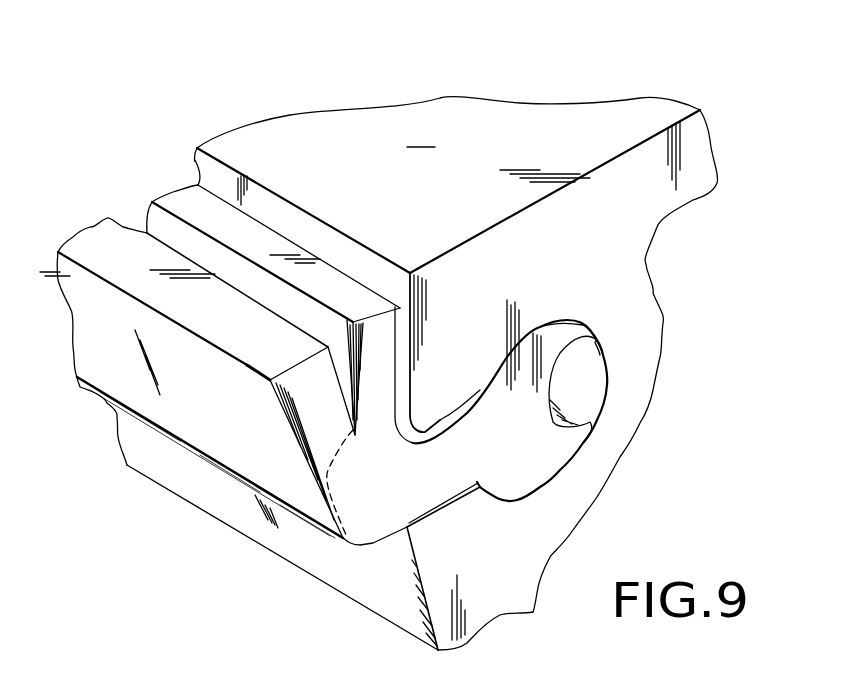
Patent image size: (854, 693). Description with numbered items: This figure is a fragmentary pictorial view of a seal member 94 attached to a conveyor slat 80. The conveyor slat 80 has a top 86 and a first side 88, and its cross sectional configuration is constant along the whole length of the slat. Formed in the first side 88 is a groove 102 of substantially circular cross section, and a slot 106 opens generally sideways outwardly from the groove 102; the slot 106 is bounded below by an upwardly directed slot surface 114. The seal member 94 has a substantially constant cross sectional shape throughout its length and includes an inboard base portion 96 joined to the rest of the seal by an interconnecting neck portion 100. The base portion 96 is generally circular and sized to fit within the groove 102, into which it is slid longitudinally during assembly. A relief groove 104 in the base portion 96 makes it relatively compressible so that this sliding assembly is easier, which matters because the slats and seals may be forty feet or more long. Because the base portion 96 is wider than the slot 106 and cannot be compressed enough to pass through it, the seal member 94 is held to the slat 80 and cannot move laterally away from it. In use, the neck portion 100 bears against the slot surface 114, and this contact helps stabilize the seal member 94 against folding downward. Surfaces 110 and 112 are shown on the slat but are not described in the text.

The conveyor slat 80 is at (379, 373).
The top 86 is at (505, 118).
The first side 88 is at (340, 253).
The seal member 94 is at (225, 475).
The base portion 96 is at (537, 493).
The neck portion 100 is at (457, 457).
The groove 102 is at (600, 347).
The relief groove 104 is at (567, 400).
The slot 106 is at (412, 427).
The inclined surface 110 is at (293, 403).
The side wall 112 is at (388, 335).
The slot surface 114 is at (428, 505).